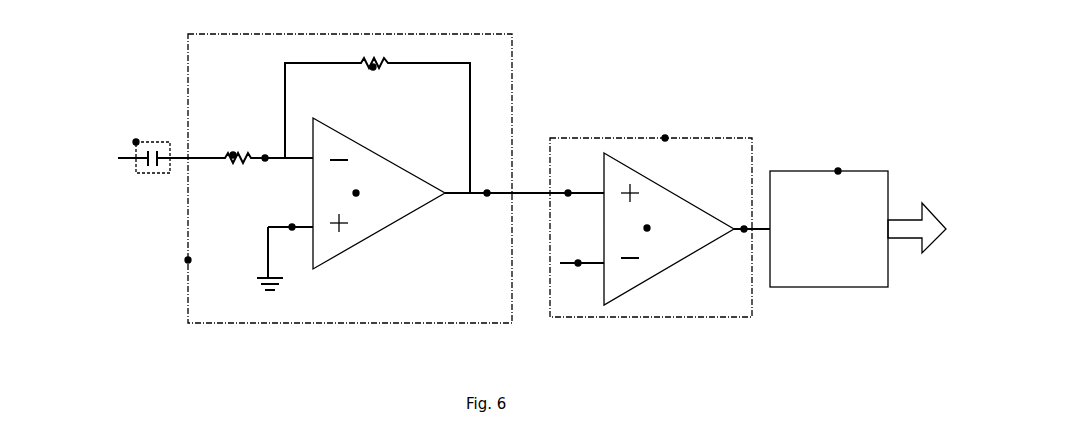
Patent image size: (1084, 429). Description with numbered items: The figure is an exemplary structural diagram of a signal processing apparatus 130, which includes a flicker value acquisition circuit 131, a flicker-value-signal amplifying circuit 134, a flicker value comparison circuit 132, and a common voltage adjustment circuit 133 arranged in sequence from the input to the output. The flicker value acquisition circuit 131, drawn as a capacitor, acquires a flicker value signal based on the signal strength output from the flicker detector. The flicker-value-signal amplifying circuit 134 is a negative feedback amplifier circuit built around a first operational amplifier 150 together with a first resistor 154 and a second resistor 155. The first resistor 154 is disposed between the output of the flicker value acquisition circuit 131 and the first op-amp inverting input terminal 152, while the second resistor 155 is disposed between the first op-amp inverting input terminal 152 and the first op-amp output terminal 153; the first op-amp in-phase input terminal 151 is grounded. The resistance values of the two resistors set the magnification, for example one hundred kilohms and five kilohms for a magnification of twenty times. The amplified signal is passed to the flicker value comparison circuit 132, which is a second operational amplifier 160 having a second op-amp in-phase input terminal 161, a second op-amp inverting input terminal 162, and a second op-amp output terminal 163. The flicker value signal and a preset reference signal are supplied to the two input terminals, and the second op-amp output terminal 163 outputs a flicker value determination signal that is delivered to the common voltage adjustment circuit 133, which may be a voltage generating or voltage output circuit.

The signal processing apparatus 130 is at (876, 30).
The flicker value acquisition circuit 131 is at (132, 125).
The flicker value comparison circuit 132 is at (669, 190).
The common voltage adjustment circuit 133 is at (865, 192).
The flicker-value-signal amplifying circuit 134 is at (283, 178).
The first operational amplifier 150 is at (398, 193).
The first op-amp in-phase input terminal 151 is at (260, 248).
The first op-amp inverting input terminal 152 is at (232, 126).
The first op-amp output terminal 153 is at (533, 125).
The first resistor 154 is at (187, 188).
The second resistor 155 is at (377, 125).
The second operational amplifier 160 is at (674, 229).
The second op-amp in-phase input terminal 161 is at (601, 143).
The second op-amp inverting input terminal 162 is at (540, 306).
The second op-amp output terminal 163 is at (798, 289).